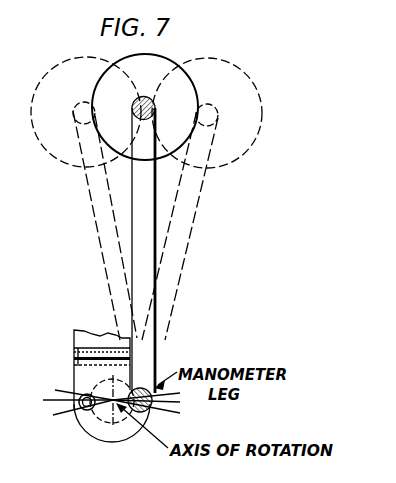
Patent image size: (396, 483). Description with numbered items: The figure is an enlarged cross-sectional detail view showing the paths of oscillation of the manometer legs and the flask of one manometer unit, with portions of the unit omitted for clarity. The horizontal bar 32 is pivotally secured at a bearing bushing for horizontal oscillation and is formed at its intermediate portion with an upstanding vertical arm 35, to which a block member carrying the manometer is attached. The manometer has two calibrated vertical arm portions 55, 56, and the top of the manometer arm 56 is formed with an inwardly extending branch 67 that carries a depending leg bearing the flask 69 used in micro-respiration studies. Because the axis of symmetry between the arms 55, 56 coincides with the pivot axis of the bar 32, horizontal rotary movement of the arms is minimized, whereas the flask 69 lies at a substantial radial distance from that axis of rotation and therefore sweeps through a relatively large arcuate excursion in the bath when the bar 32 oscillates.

The flask 69 is at (178, 66).
The inwardly extending branch 67 is at (143, 252).
The horizontal bar 32 is at (76, 368).
The vertical arm 35 is at (97, 349).
The manometer arm 55 is at (80, 408).
The manometer arm 56 is at (152, 406).